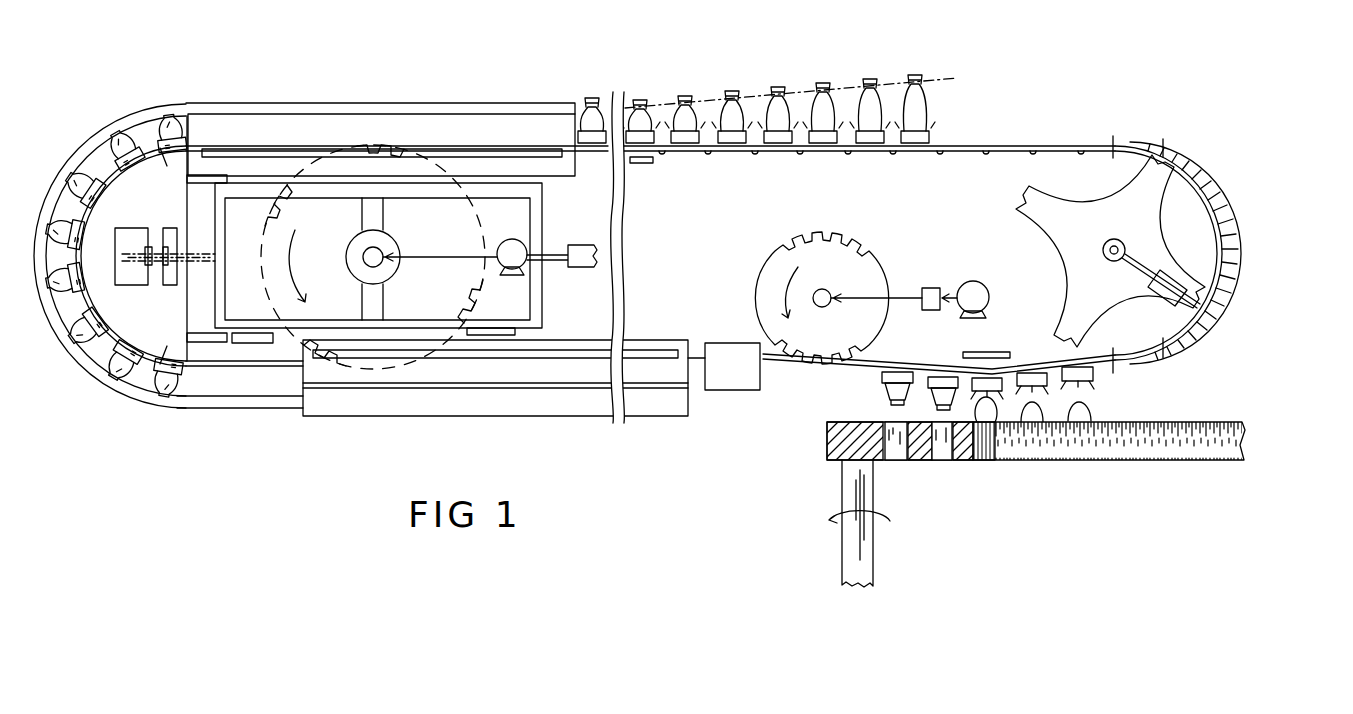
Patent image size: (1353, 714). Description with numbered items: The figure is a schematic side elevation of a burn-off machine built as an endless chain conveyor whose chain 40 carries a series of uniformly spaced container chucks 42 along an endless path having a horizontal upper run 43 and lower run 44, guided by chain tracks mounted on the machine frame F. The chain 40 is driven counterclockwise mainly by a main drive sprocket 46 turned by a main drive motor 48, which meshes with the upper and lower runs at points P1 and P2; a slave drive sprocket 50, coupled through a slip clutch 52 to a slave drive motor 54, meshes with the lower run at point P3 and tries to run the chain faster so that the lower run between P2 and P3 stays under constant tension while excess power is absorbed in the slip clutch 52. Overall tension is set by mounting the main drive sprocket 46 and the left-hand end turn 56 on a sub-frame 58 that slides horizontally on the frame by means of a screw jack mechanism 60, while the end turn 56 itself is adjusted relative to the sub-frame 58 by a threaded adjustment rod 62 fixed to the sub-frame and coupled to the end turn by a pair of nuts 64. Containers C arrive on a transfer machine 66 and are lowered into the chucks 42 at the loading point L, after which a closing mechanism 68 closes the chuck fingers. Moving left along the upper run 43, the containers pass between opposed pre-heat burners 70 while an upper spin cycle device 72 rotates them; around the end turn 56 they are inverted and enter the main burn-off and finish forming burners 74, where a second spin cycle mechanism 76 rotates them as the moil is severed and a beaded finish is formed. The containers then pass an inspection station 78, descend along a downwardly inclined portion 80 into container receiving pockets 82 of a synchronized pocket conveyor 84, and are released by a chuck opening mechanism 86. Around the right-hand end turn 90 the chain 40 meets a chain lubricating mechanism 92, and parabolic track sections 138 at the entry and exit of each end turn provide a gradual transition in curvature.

The chain 40 is at (970, 148).
The container chucks 42 is at (133, 333).
The upper run 43 is at (635, 91).
The lower run 44 is at (702, 377).
The main drive sprocket 46 is at (463, 232).
The main drive motor 48 is at (513, 252).
The slave drive sprocket 50 is at (850, 272).
The slip clutch 52 is at (933, 292).
The slave drive motor 54 is at (977, 297).
The left-hand end turn 56 is at (114, 160).
The sub-frame 58 is at (243, 194).
The screw jack mechanism 60 is at (580, 267).
The drive shaft 62 is at (215, 262).
The nuts 64 is at (165, 247).
The transfer machine 66 is at (957, 78).
The closing mechanism 68 is at (648, 164).
The pre-heat burners 70 is at (360, 103).
The upper spin cycle device 72 is at (345, 152).
The main burn-off and finish forming burners 74 is at (347, 416).
The second spin cycle mechanism 76 is at (445, 358).
The inspection station 78 is at (732, 366).
The downwardly inclined portion 80 is at (953, 365).
The container receiving pockets 82 is at (935, 462).
The pocket conveyor 84 is at (1084, 470).
The chuck opening mechanism 86 is at (985, 352).
The right-hand end turn 90 is at (1218, 218).
The chain lubricating mechanism 92 is at (1170, 257).
The parabolic track section 138 is at (167, 118).
The containers C is at (872, 82).
The loading point L is at (668, 101).
The machine frame F is at (525, 335).
The point P-1 P1 is at (400, 148).
The point P-2 P2 is at (378, 360).
The point P-3 P3 is at (815, 365).